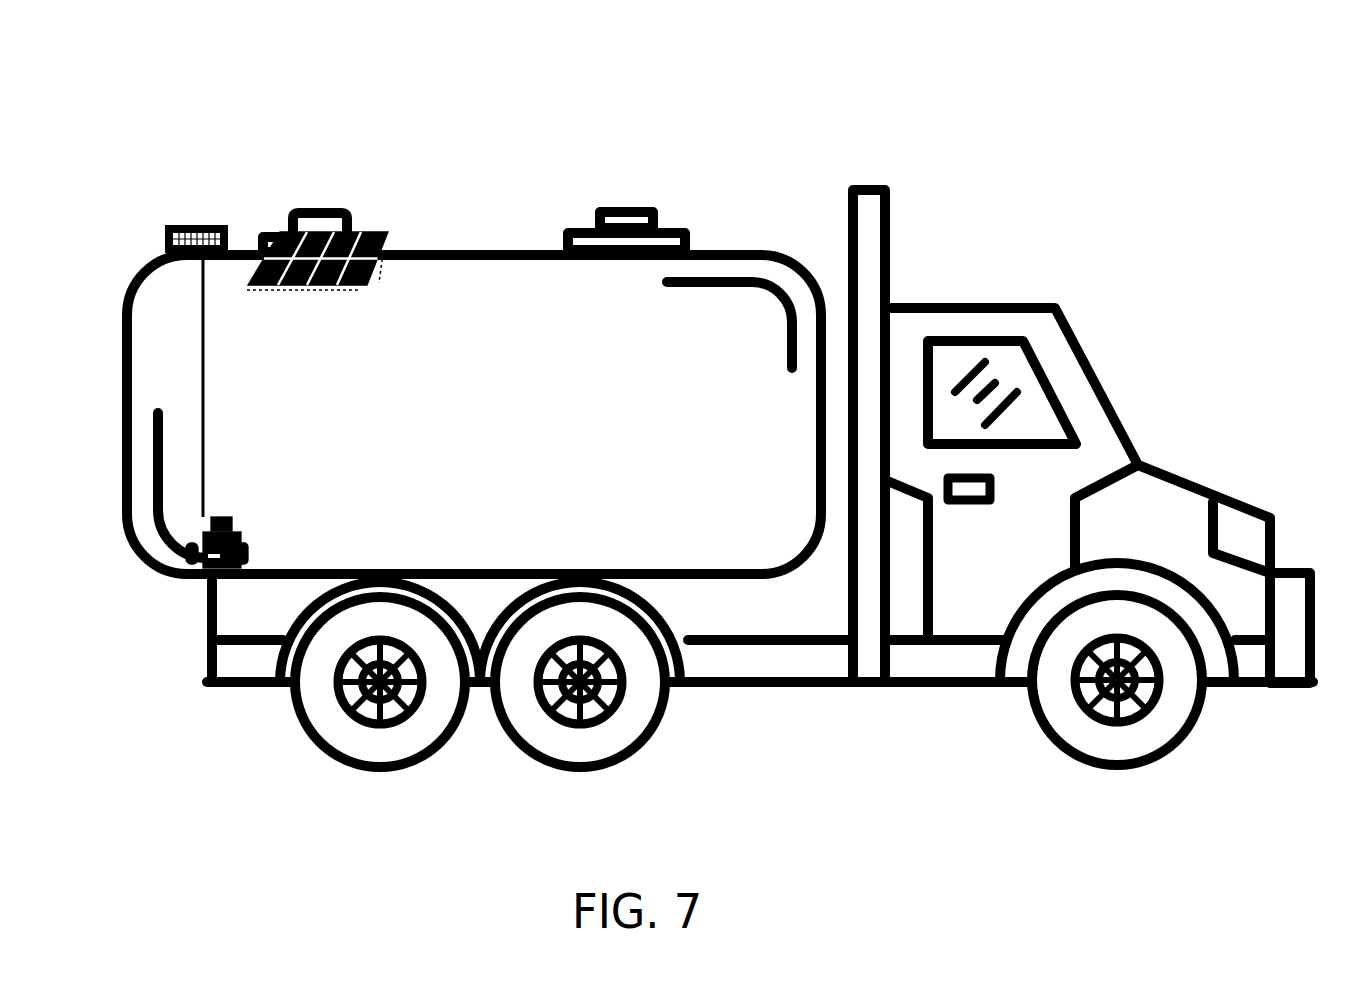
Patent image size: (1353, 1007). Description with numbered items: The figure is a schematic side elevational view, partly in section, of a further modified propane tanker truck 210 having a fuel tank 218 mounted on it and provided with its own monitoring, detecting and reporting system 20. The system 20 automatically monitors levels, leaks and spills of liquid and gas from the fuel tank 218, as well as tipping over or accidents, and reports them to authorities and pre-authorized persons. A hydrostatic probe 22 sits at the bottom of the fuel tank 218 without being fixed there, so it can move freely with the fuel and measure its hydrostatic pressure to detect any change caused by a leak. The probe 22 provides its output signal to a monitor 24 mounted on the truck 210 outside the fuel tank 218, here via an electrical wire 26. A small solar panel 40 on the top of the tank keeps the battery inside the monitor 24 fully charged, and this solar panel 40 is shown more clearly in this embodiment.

The monitoring, detecting and reporting system 20 is at (198, 168).
The hydrostatic probe 22 is at (244, 539).
The monitor 24 is at (166, 229).
The electrical wire 26 is at (208, 378).
The solar panel 40 is at (387, 238).
The propane tanker truck 210 is at (704, 131).
The fuel tank 218 is at (535, 247).